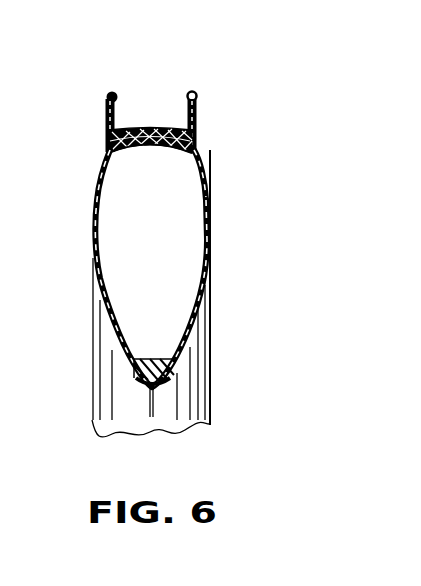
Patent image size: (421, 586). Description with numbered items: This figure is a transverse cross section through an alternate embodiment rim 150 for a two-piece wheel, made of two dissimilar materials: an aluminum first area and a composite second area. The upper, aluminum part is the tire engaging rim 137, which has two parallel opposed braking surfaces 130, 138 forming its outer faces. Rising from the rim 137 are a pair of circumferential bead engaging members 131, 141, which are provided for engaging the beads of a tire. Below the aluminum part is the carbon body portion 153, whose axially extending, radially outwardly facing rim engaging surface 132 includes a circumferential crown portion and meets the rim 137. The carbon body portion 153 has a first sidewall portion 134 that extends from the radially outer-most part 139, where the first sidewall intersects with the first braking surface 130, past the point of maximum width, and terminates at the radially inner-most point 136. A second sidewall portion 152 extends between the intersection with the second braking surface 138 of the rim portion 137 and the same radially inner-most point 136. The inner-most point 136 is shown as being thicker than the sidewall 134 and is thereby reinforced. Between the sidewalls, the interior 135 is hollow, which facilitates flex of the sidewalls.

The first braking surface 130 is at (198, 117).
The bead engaging member 131 is at (111, 91).
The rim engaging surface 132 is at (205, 182).
The first sidewall portion 134 is at (212, 223).
The interior 135 is at (111, 259).
The radially inner-most point 136 is at (152, 389).
The tire engaging rim 137 is at (150, 128).
The second braking surface 138 is at (106, 128).
The radially outer-most part 139 is at (199, 150).
The bead engaging member 141 is at (193, 90).
The rim 150 is at (234, 292).
The second sidewall portion 152 is at (103, 337).
The carbon body portion 153 is at (242, 353).